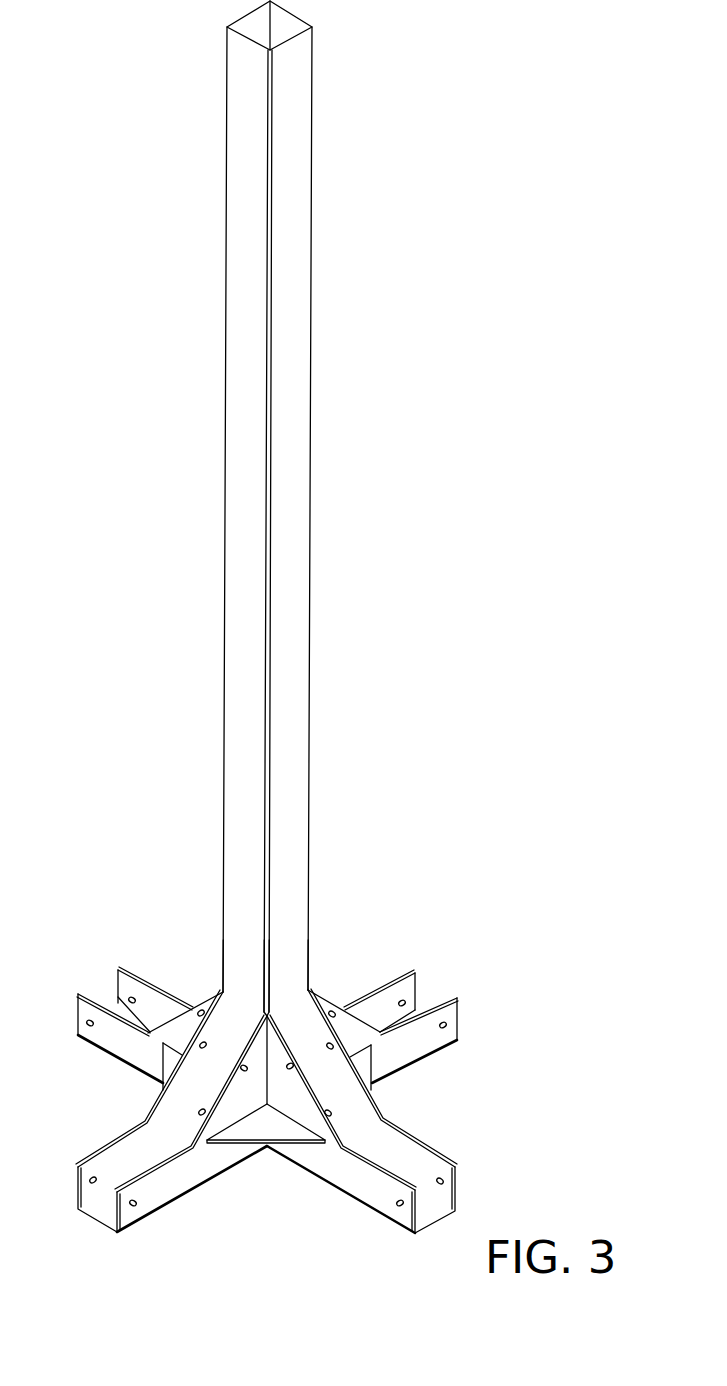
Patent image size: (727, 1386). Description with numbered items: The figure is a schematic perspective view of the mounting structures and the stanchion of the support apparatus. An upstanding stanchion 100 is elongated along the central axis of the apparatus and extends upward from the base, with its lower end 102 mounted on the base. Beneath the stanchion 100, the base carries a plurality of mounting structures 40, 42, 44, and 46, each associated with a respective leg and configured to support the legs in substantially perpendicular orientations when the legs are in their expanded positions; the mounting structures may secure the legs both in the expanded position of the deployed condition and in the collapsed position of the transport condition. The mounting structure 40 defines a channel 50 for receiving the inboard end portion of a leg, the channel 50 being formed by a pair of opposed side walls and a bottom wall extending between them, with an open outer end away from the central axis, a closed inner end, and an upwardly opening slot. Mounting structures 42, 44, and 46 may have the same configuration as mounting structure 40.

The stanchion 100 is at (293, 428).
The lower end 102 is at (293, 987).
The mounting structure 40 is at (308, 1095).
The mounting structure 42 is at (470, 1156).
The mounting structure 44 is at (488, 1033).
The mounting structure 46 is at (207, 1226).
The channel 50 is at (154, 1008).